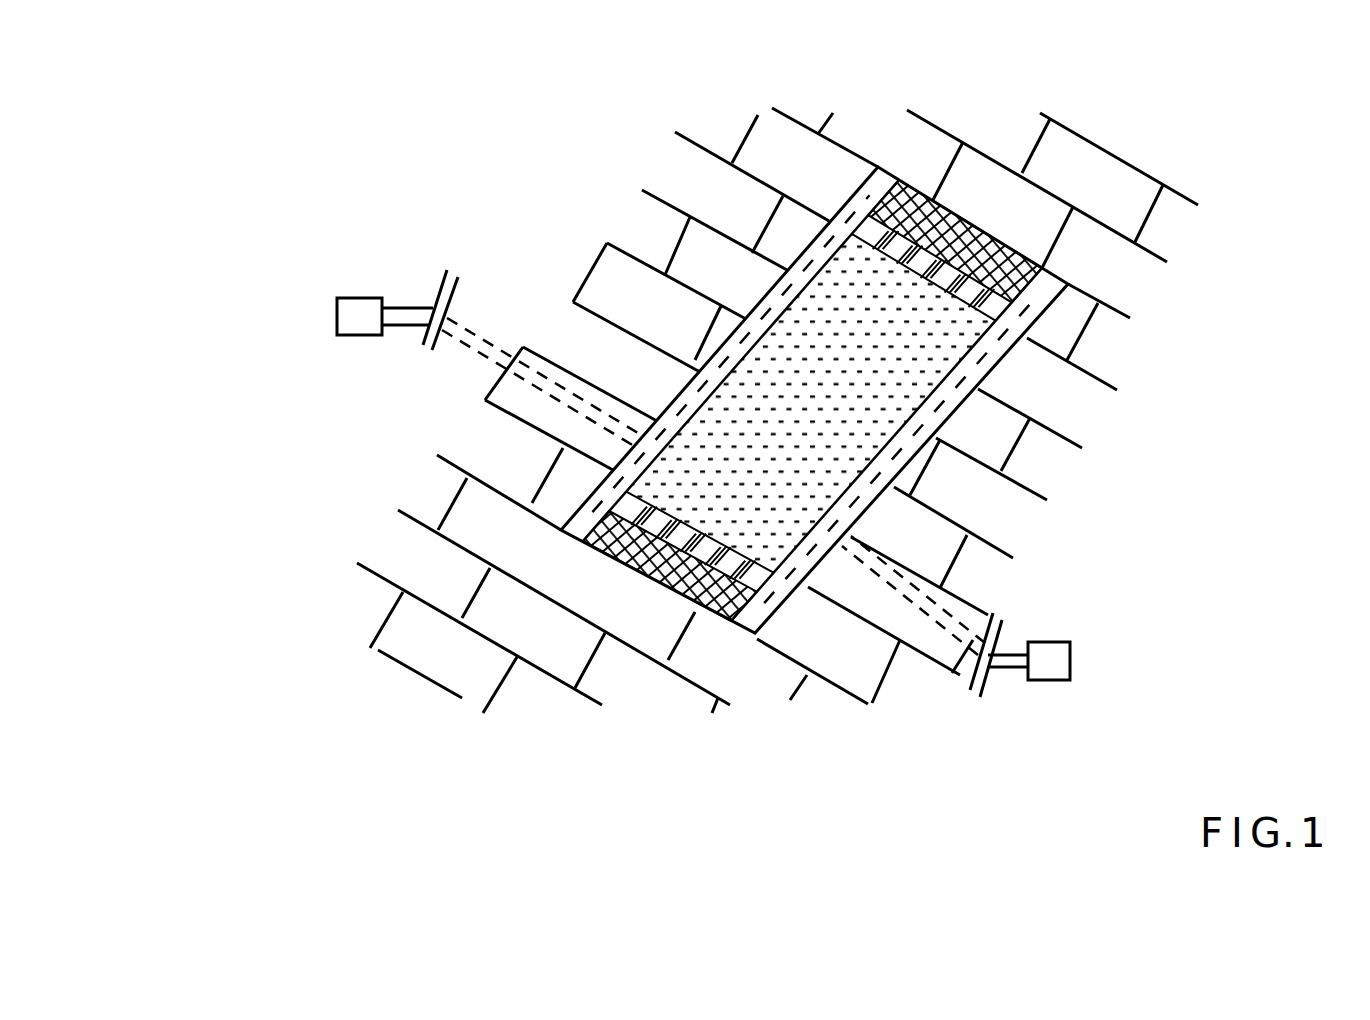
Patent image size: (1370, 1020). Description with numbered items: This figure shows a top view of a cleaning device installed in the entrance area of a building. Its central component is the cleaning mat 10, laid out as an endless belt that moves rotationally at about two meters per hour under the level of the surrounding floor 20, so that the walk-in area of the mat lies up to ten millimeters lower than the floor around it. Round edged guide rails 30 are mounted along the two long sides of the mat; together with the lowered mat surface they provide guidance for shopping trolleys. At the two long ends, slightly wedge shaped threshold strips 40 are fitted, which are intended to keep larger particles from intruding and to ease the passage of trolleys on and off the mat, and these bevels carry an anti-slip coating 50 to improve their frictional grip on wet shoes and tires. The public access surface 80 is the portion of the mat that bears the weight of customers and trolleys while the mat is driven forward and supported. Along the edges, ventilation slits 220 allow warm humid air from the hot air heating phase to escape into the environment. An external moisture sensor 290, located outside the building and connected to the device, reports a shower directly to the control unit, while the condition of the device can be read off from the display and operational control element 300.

The cleaning mat 10 is at (700, 472).
The surrounding floor 20 is at (417, 584).
The guide rails 30 is at (710, 392).
The threshold strips 40 is at (871, 233).
The anti-slip coating 50 is at (976, 234).
The public access surface 80 is at (795, 403).
The ventilation slits 220 is at (990, 367).
The external moisture sensor 290 is at (360, 322).
The display and operational control element 300 is at (1068, 680).